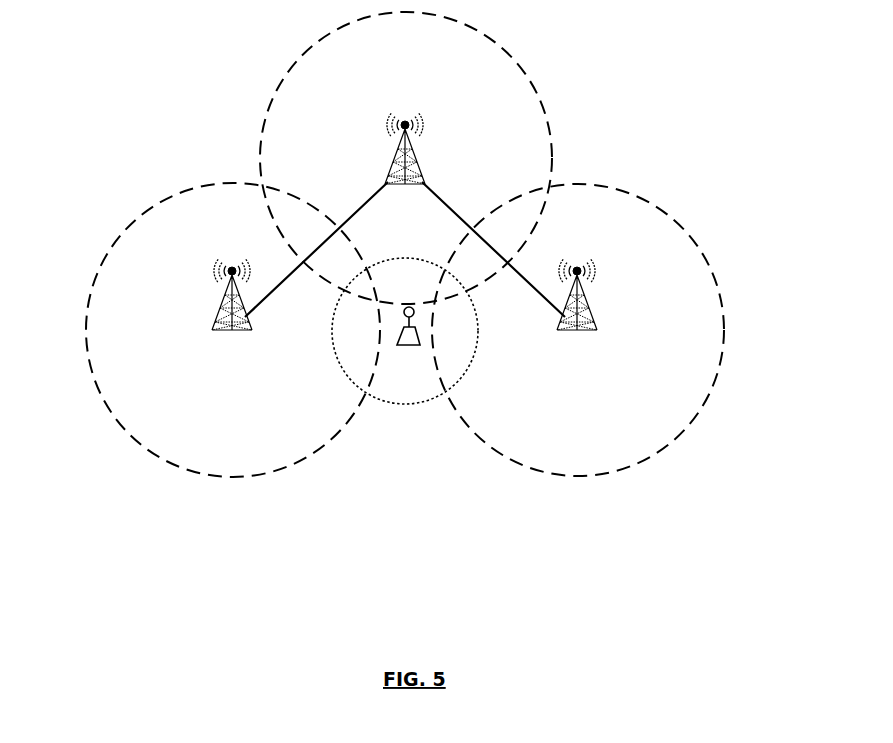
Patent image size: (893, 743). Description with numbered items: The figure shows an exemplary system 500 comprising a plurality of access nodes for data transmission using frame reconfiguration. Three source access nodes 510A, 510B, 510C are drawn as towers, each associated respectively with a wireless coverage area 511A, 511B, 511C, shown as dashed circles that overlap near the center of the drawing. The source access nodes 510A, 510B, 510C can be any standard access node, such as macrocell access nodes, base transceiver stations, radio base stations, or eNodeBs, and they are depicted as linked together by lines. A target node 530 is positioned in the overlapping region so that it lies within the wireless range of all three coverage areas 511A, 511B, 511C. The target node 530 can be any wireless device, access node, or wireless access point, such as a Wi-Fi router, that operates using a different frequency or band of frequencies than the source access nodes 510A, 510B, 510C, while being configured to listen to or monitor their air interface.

The system 500 is at (633, 65).
The source access node 510A is at (220, 313).
The source access node 510B is at (393, 168).
The source access node 510C is at (592, 317).
The coverage area 511A is at (155, 205).
The coverage area 511B is at (292, 63).
The coverage area 511C is at (668, 215).
The target node 530 is at (410, 346).